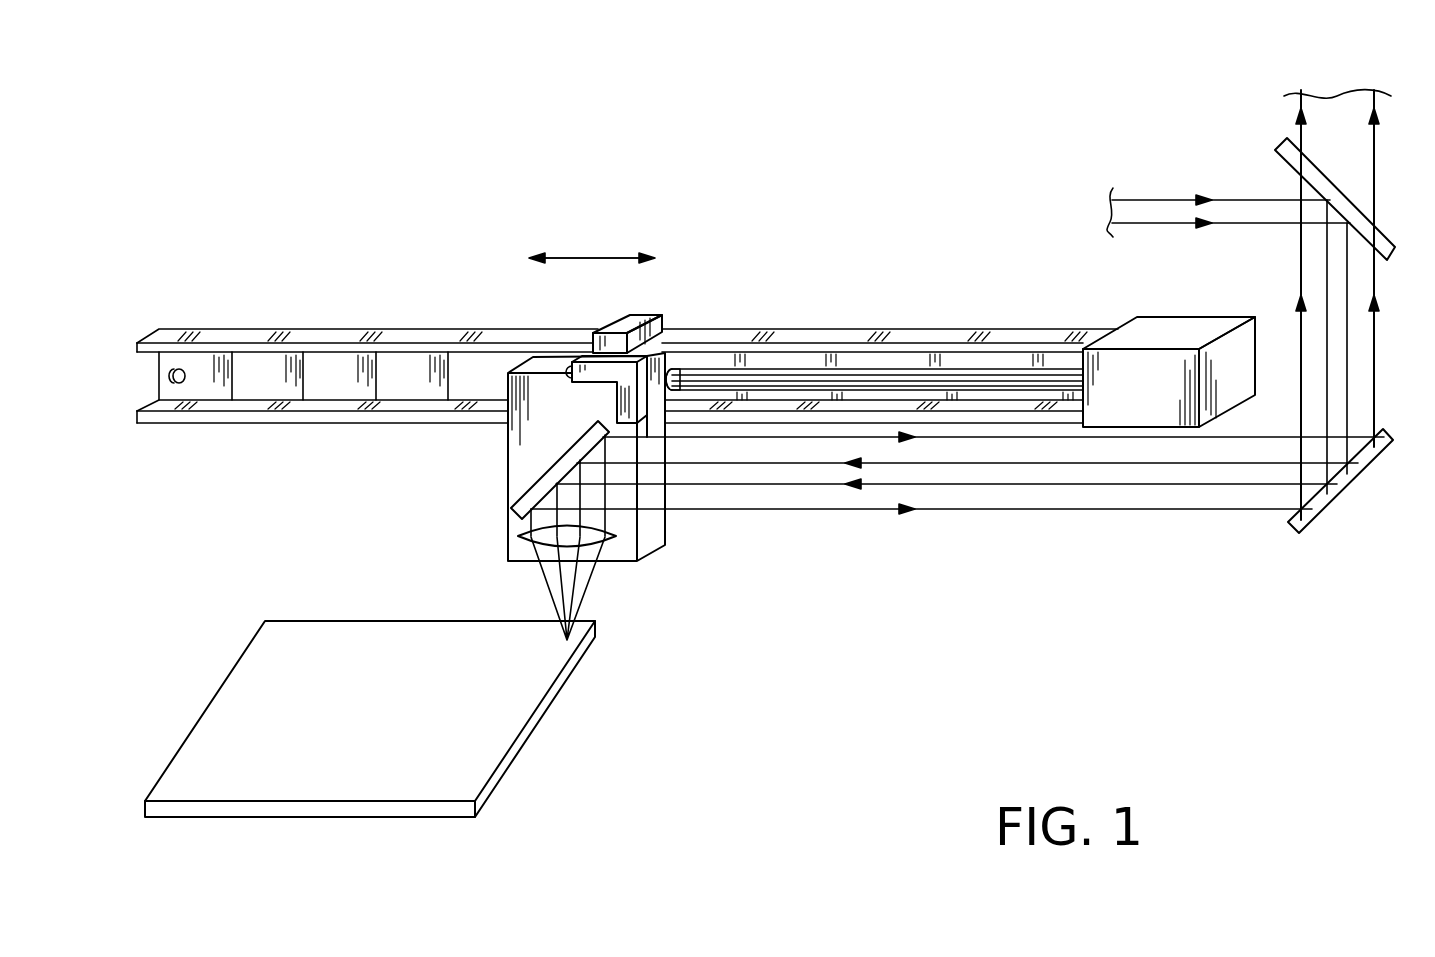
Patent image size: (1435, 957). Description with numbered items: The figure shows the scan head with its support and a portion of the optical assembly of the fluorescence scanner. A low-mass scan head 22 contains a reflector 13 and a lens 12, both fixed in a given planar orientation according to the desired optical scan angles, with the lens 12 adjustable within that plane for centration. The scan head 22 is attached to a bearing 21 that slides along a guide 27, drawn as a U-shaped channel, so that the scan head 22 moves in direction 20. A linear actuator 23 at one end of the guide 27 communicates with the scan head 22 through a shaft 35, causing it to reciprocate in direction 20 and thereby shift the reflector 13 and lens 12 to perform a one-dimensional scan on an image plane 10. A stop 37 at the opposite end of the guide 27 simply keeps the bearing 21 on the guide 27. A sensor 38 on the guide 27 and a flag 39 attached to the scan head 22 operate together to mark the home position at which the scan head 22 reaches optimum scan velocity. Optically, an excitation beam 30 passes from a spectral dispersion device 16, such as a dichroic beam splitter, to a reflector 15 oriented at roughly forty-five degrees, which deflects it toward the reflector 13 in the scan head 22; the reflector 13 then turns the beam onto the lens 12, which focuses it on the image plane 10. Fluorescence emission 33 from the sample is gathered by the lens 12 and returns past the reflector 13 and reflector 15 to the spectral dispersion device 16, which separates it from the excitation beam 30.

The image plane 10 is at (290, 628).
The lens 12 is at (613, 530).
The reflector 13 is at (530, 493).
The reflector 15 is at (1353, 481).
The spectral dispersion device 16 is at (1388, 239).
The direction 20 is at (591, 257).
The bearing 21 is at (677, 368).
The scan head 22 is at (518, 536).
The linear actuator 23 is at (1193, 314).
The guide 27 is at (329, 338).
The excitation beam 30 is at (1140, 224).
The fluorescence emission 33 is at (1376, 148).
The shaft 35 is at (858, 379).
The stop 37 is at (166, 376).
The sensor 38 is at (662, 321).
The flag 39 is at (563, 366).